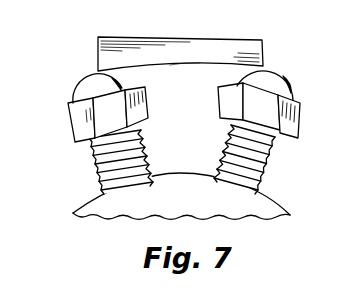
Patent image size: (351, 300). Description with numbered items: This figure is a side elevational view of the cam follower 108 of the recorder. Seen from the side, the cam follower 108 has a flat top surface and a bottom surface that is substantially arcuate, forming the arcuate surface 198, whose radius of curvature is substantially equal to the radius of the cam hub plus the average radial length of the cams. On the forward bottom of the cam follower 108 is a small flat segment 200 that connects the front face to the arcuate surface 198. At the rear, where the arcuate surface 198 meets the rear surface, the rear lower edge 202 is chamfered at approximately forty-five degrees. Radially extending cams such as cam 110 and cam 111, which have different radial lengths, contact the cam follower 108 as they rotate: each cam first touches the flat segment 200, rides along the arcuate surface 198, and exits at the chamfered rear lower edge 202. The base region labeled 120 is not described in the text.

The cam follower 108 is at (180, 53).
The arcuate surface 198 is at (190, 72).
The flat segment 200 is at (85, 79).
The rear lower edge 202 is at (264, 68).
The cam 111 is at (87, 118).
The cam 110 is at (281, 117).
The base 120 is at (88, 202).